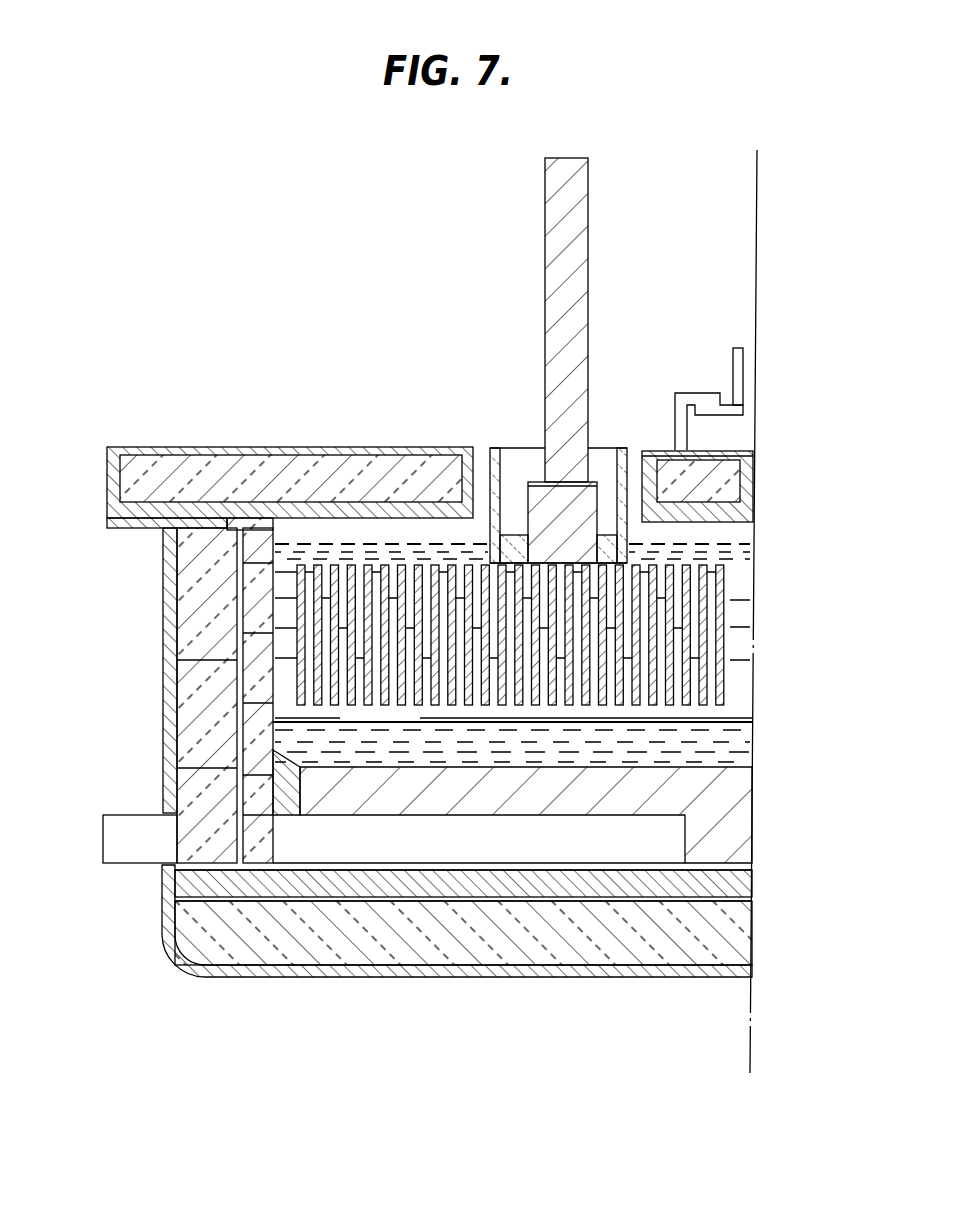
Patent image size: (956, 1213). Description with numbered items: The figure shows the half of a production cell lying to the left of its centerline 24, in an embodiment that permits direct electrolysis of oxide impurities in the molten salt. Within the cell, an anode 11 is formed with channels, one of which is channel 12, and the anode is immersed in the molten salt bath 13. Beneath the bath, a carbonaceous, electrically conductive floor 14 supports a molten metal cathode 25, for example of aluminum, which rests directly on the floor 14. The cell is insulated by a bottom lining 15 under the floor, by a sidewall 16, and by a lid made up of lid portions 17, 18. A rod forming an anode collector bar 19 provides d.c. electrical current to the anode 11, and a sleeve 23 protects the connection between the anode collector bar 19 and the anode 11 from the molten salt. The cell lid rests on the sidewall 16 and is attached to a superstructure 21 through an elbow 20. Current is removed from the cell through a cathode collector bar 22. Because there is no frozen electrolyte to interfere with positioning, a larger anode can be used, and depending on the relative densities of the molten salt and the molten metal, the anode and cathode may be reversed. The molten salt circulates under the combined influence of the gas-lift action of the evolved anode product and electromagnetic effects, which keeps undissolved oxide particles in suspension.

The anode 11 is at (738, 587).
The channel in the anode 12 is at (716, 562).
The molten salt bath 13 is at (739, 675).
The floor 14 is at (758, 823).
The bottom lining 15 is at (337, 935).
The sidewall 16 is at (189, 731).
The lid 17 is at (331, 472).
The lid 18 is at (663, 450).
The anode collector bar 19 is at (547, 274).
The elbow 20 is at (688, 390).
The superstructure 21 is at (736, 346).
The cathode collector bar 22 is at (139, 845).
The sleeve 23 is at (494, 447).
The centerline 24 is at (760, 188).
The molten metal cathode 25 is at (753, 737).